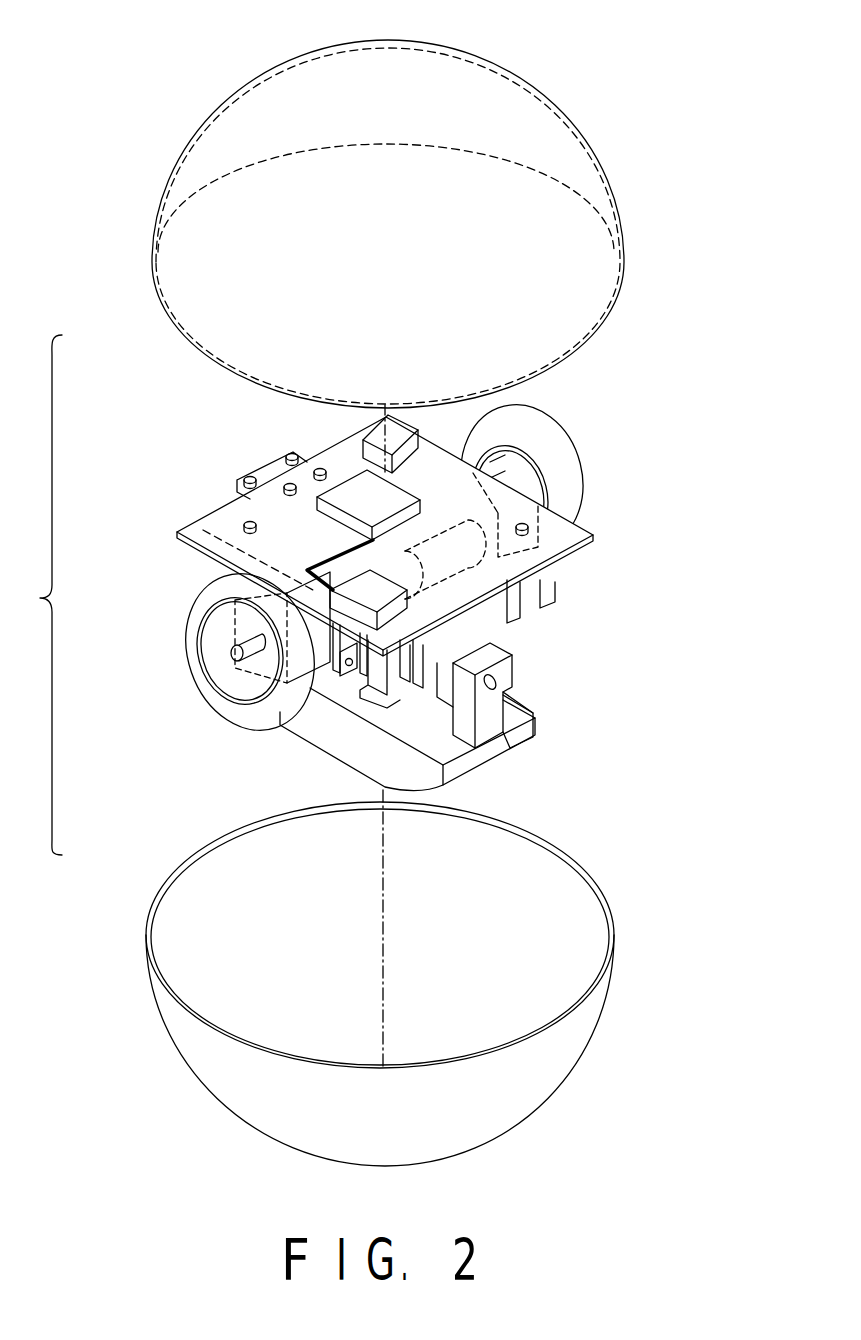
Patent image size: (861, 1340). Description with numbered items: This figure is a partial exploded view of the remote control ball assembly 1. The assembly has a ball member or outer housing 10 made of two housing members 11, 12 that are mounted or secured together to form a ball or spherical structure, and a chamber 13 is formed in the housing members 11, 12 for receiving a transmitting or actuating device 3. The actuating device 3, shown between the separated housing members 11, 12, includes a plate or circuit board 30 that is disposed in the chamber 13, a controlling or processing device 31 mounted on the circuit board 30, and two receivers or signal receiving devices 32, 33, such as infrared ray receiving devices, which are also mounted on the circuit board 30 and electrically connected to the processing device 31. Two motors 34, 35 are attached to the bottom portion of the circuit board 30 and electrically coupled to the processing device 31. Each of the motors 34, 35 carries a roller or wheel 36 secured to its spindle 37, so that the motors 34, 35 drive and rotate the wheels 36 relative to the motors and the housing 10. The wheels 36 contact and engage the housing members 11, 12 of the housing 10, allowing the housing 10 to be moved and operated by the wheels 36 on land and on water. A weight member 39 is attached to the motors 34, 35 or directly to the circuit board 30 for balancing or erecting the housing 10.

The remote control ball assembly 1 is at (638, 72).
The actuating device 3 is at (165, 400).
The outer housing 10 is at (190, 140).
The housing member 11 is at (603, 175).
The housing member 12 is at (565, 1090).
The chamber 13 is at (200, 977).
The circuit board 30 is at (235, 507).
The processing device 31 is at (343, 497).
The signal receiving device 32 is at (380, 437).
The signal receiving device 33 is at (443, 630).
The motor 34 is at (467, 563).
The motor 35 is at (203, 530).
The wheel 36 is at (190, 613).
The spindle 37 is at (237, 657).
The weight member 39 is at (355, 748).